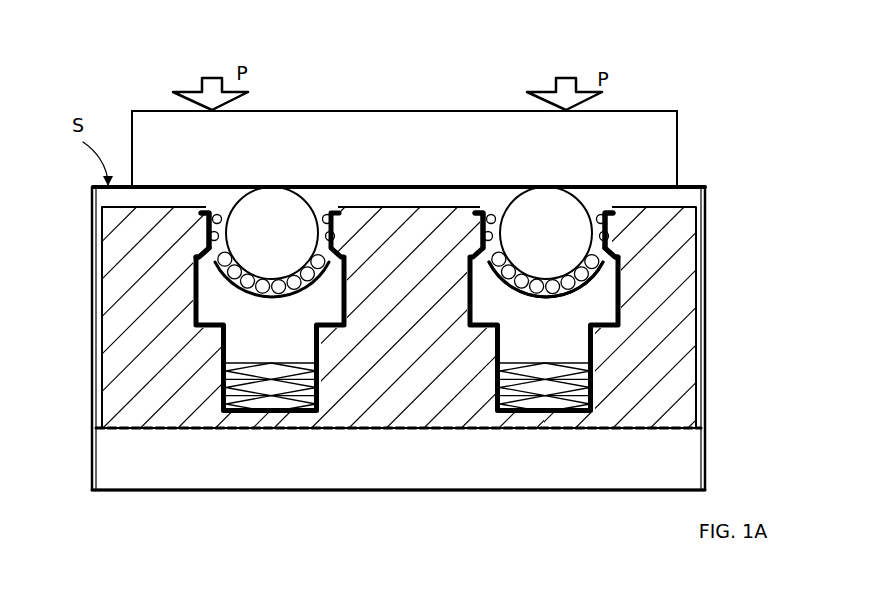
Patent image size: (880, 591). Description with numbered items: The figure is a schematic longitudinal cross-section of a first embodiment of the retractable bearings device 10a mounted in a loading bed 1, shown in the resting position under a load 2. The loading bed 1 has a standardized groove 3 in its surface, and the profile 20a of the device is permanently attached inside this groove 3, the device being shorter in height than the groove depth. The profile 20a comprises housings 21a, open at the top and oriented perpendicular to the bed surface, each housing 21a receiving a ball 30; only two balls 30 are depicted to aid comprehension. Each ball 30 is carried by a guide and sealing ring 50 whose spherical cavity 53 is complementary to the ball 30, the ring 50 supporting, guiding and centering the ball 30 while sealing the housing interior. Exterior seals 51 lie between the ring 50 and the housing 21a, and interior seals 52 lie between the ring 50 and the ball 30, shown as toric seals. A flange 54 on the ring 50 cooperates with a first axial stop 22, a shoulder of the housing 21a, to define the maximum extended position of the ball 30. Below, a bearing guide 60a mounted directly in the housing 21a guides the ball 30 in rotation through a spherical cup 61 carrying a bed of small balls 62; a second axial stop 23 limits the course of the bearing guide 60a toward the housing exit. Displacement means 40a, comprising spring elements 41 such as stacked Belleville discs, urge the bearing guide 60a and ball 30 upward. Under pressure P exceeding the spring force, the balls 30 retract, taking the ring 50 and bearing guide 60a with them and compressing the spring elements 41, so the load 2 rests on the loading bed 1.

The loading bed 1 is at (92, 213).
The load 2 is at (389, 159).
The groove 3 is at (703, 417).
The retractable bearings device 10a is at (690, 108).
The profile 20a is at (662, 322).
The housing 21a is at (589, 197).
The first axial stop 22 is at (207, 238).
The second axial stop 23 is at (615, 250).
The ball 30 is at (259, 244).
The displacement means 40a is at (532, 405).
The spring elements 41 is at (293, 413).
The guide and sealing ring 50 is at (606, 222).
The exterior seals 51 is at (207, 212).
The interior seals 52 is at (212, 233).
The spherical cavity 53 is at (500, 236).
The flange 54 is at (197, 307).
The bearing guide 60a is at (597, 290).
The spherical cup 61 is at (515, 298).
The small balls 62 is at (548, 297).